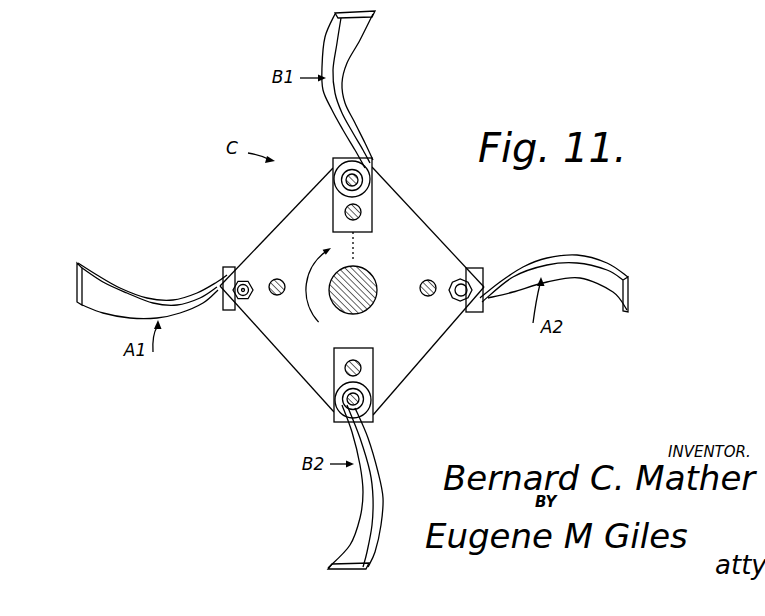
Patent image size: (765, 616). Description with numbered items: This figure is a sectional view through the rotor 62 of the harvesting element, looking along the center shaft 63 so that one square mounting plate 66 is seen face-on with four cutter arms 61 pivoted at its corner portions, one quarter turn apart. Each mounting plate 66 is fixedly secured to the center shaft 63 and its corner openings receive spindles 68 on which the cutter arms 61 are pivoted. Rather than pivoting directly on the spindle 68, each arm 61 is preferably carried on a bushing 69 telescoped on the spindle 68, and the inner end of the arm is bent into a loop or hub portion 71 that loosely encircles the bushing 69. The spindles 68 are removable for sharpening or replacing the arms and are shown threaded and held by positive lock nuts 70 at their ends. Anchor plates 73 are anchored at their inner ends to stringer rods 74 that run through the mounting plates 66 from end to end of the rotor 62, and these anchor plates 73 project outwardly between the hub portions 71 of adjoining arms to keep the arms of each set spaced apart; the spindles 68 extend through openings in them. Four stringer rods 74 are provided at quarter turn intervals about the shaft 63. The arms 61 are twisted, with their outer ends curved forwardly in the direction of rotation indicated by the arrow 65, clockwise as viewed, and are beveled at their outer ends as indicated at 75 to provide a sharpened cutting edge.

The cutter arm 61 is at (343, 99).
The rotor 62 is at (448, 231).
The center shaft 63 is at (374, 273).
The arrows 65 is at (310, 293).
The mounting plate 66 is at (280, 350).
The spindle 68 is at (357, 177).
The bushing 69 is at (350, 180).
The lock nut 70 is at (460, 284).
The loop or hub portion 71 is at (370, 188).
The anchor plate 73 is at (367, 202).
The stringer rod 74 is at (362, 214).
The beveled cutting edge 75 is at (338, 12).